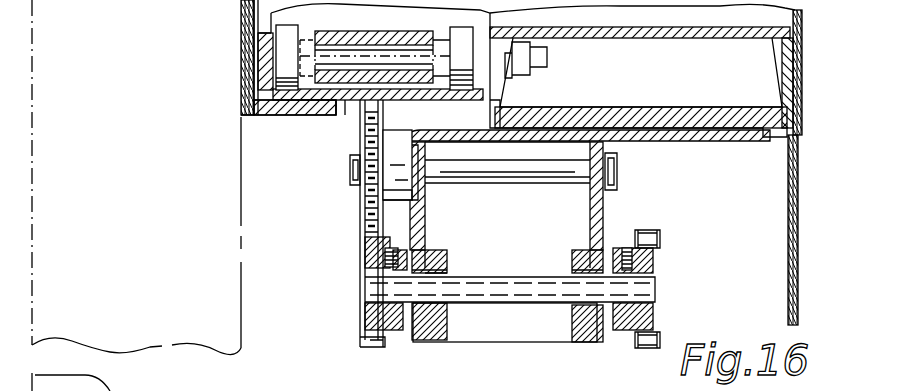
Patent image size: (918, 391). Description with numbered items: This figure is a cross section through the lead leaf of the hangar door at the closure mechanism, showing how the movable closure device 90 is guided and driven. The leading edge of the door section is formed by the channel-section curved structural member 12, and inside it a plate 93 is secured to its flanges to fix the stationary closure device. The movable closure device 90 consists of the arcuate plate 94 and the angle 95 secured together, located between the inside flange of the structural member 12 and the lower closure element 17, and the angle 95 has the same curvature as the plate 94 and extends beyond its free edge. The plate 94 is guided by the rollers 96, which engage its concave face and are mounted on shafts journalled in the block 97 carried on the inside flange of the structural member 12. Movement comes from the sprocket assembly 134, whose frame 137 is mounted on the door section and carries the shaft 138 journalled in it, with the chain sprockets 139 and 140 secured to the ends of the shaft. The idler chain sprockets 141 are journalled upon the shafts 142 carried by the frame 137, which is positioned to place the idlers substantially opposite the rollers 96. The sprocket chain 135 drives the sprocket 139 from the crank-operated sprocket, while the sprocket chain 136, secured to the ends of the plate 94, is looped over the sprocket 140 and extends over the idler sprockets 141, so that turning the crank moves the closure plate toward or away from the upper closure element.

The curved structural member 12 is at (690, 40).
The lower closure element 17 is at (243, 261).
The movable closure device 90 is at (350, 100).
The plate 93 is at (707, 107).
The arcuate plate 94 is at (403, 97).
The angle 95 is at (273, 110).
The rollers 96 is at (284, 32).
The block 97 is at (375, 37).
The sprocket assembly 134 is at (574, 348).
The sprocket chain 135 is at (657, 232).
The sprocket chain 136 is at (362, 222).
The frame 137 is at (658, 142).
The shaft 138 is at (522, 285).
The chain sprocket 139 is at (648, 312).
The chain sprocket 140 is at (393, 330).
The idler chain sprockets 141 is at (405, 212).
The shafts 142 is at (503, 175).